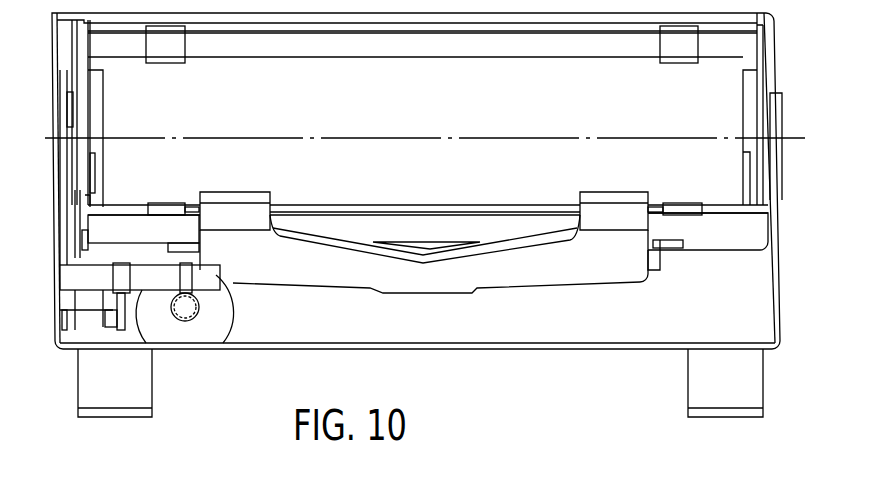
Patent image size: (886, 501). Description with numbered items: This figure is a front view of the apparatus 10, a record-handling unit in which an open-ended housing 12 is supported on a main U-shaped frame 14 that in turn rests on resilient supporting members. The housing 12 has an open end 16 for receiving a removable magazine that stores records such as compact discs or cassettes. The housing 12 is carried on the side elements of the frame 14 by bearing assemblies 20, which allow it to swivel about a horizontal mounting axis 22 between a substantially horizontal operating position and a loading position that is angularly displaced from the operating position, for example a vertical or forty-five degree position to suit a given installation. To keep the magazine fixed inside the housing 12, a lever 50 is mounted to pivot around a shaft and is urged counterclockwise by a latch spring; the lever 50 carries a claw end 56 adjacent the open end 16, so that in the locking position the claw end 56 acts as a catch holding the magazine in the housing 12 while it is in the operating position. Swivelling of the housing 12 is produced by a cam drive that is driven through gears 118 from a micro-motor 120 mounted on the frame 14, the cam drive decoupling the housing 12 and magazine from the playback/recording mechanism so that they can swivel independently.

The apparatus 10 is at (558, 350).
The housing 12 is at (750, 80).
The main U-shaped frame 14 is at (775, 285).
The open end 16 is at (755, 58).
The bearing assemblies 20 is at (780, 128).
The horizontal axis 22 is at (788, 140).
The lever 50 is at (543, 273).
The claw end 56 is at (250, 198).
The gears 118 is at (82, 322).
The micro-motor 120 is at (218, 318).